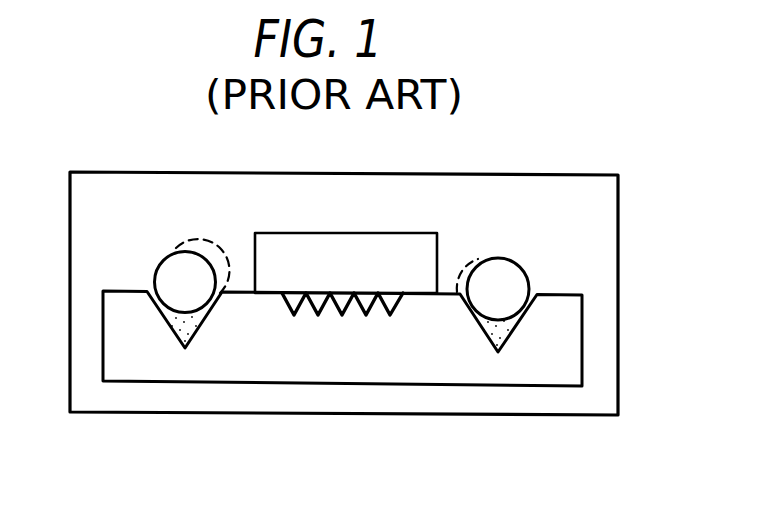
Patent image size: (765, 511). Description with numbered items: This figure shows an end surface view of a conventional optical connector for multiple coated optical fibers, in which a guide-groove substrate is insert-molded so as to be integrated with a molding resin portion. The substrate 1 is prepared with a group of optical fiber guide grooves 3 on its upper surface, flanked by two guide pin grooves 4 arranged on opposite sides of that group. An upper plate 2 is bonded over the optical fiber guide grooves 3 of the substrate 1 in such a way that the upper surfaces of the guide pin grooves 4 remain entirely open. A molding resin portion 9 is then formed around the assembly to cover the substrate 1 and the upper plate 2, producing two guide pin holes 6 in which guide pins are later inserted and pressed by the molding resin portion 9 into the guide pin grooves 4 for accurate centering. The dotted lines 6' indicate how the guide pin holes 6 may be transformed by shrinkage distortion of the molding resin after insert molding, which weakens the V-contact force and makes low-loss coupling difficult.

The substrate 1 is at (404, 372).
The upper plate 2 is at (362, 252).
The optical fiber guide grooves 3 is at (310, 313).
The guide pin grooves 4 is at (175, 343).
The guide pin holes 6 is at (185, 220).
The dotted lines showing transformed guide pin holes 6' is at (223, 210).
The molding resin portion 9 is at (510, 189).